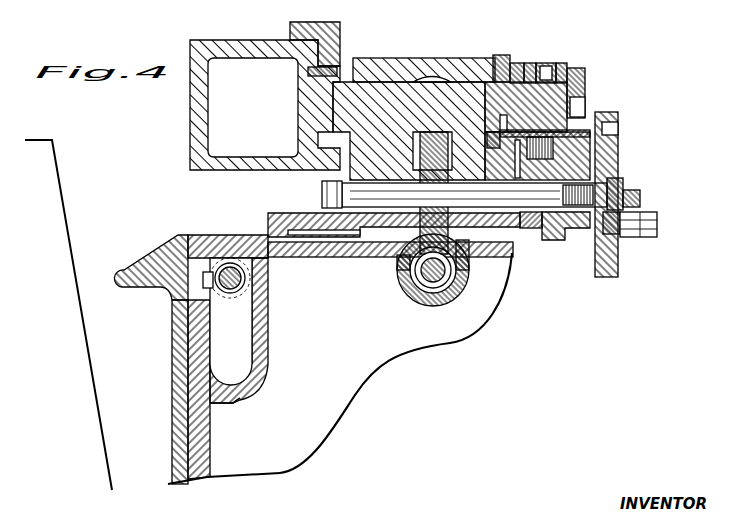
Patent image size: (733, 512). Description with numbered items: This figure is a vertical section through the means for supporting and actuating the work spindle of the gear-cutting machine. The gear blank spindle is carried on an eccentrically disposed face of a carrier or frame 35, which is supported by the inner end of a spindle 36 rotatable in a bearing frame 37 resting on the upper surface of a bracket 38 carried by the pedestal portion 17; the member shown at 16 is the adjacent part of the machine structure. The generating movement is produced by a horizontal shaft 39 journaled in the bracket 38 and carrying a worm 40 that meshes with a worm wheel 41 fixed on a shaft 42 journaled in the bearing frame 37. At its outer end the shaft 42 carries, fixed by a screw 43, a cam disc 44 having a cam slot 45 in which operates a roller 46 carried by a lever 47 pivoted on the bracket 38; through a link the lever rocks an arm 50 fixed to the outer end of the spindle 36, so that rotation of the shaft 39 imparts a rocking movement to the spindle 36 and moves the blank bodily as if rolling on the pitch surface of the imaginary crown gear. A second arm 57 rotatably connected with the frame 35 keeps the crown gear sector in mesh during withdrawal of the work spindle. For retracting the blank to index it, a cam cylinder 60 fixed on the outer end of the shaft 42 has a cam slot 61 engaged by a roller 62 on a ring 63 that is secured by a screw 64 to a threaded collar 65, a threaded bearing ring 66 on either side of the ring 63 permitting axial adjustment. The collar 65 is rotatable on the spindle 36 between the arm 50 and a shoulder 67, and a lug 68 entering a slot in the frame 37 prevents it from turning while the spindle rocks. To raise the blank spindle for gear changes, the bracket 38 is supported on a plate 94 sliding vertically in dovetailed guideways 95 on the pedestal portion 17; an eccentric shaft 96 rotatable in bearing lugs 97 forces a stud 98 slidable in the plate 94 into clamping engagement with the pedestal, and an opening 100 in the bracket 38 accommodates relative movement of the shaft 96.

The frame support 16 is at (100, 205).
The pedestal portion 17 is at (168, 263).
The carrier or frame 35 is at (192, 117).
The spindle 36 is at (386, 64).
The bearing frame 37 is at (420, 76).
The bracket 38 is at (493, 302).
The horizontal shaft 39 is at (418, 274).
The worm 40 is at (413, 302).
The worm wheel 41 is at (410, 256).
The shaft 42 is at (481, 200).
The screw 43 is at (624, 186).
The cam disc 44 is at (620, 265).
The cam slot 45 is at (612, 124).
The roller 46 is at (612, 237).
The lever 47 is at (641, 200).
The arm 50 is at (584, 78).
The second arm 57 is at (296, 26).
The cam cylinder 60 is at (584, 240).
The cam slot 61 is at (550, 232).
The roller 62 is at (597, 152).
The ring 63 is at (597, 133).
The screw 64 is at (546, 62).
The collar 65 is at (512, 62).
The threaded bearing ring 66 is at (527, 62).
The shoulder 67 is at (491, 135).
The lug 68 is at (490, 78).
The plate 94 is at (210, 445).
The dovetailed guideways 95 is at (236, 402).
The eccentric shaft 96 is at (246, 282).
The bearing lugs 97 is at (258, 304).
The stud 98 is at (203, 283).
The opening 100 is at (250, 350).